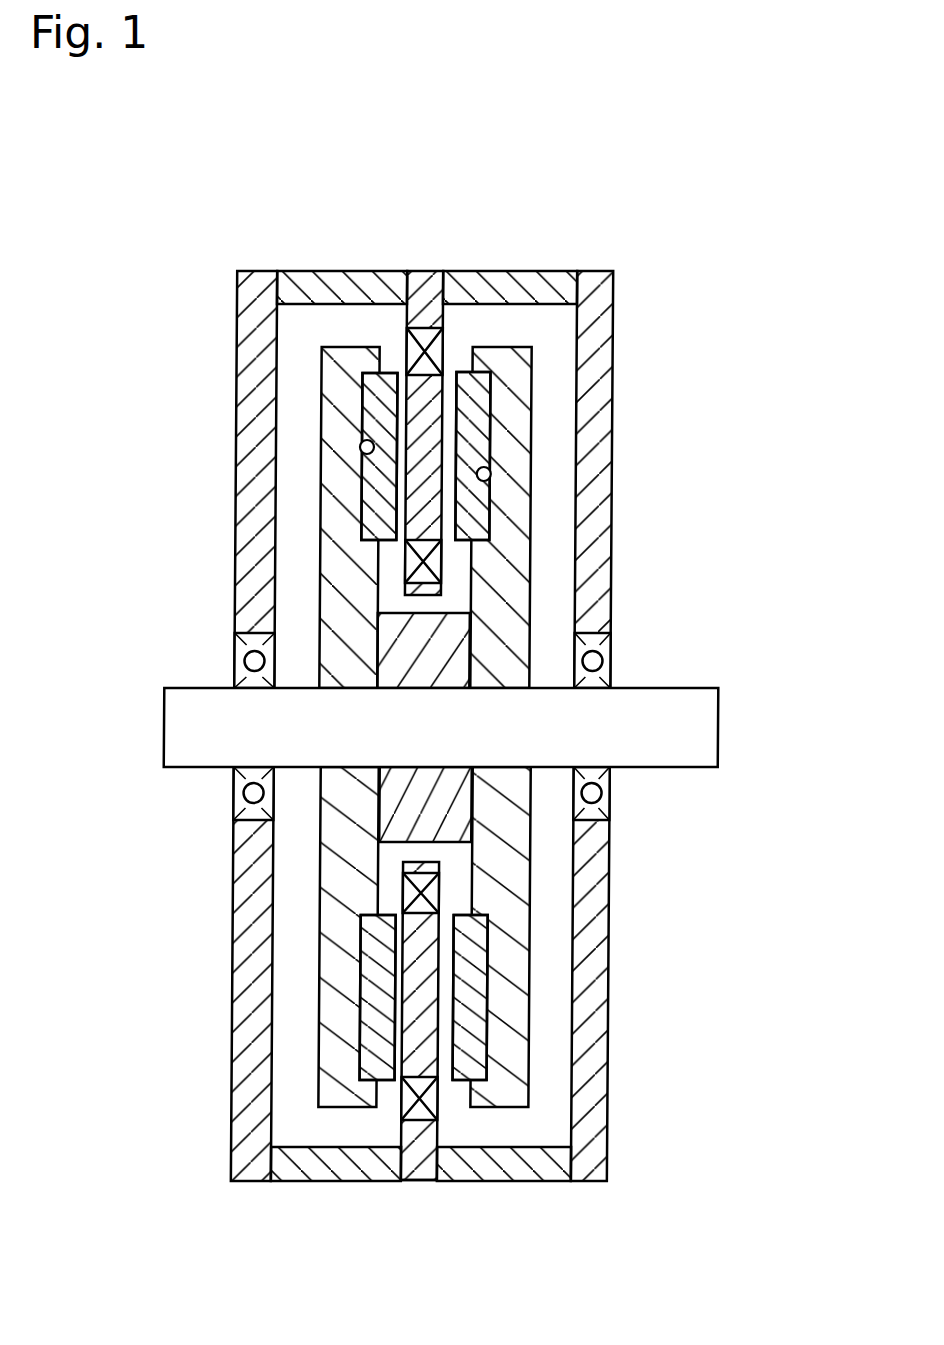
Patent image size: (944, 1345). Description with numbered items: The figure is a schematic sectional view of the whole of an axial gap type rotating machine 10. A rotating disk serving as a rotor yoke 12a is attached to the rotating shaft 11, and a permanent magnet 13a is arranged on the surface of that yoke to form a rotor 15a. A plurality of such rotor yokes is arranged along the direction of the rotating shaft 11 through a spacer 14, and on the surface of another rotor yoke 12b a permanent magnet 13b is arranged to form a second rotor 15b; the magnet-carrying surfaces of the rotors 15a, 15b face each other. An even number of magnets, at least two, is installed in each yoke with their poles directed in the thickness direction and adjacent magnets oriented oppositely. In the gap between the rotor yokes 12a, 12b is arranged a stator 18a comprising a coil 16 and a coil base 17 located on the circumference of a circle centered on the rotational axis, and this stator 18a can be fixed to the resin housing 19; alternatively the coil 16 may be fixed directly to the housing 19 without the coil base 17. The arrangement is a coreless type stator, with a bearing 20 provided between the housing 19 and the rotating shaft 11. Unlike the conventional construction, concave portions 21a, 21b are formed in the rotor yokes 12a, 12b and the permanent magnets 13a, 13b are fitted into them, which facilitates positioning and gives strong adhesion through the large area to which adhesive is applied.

The rotating machine 10 is at (667, 220).
The rotating shaft 11 is at (710, 722).
The rotor yoke 12a is at (340, 375).
The rotor yoke 12b is at (521, 425).
The permanent magnet 13a is at (372, 410).
The permanent magnet 13b is at (486, 385).
The spacer 14 is at (397, 628).
The rotor 15a is at (386, 336).
The rotor 15b is at (471, 335).
The coil 16 is at (445, 568).
The coil base 17 is at (433, 1050).
The stator 18a is at (427, 1183).
The housing 19 is at (599, 480).
The bearing 20 is at (601, 645).
The concave portion 21a is at (366, 448).
The concave portion 21b is at (488, 478).